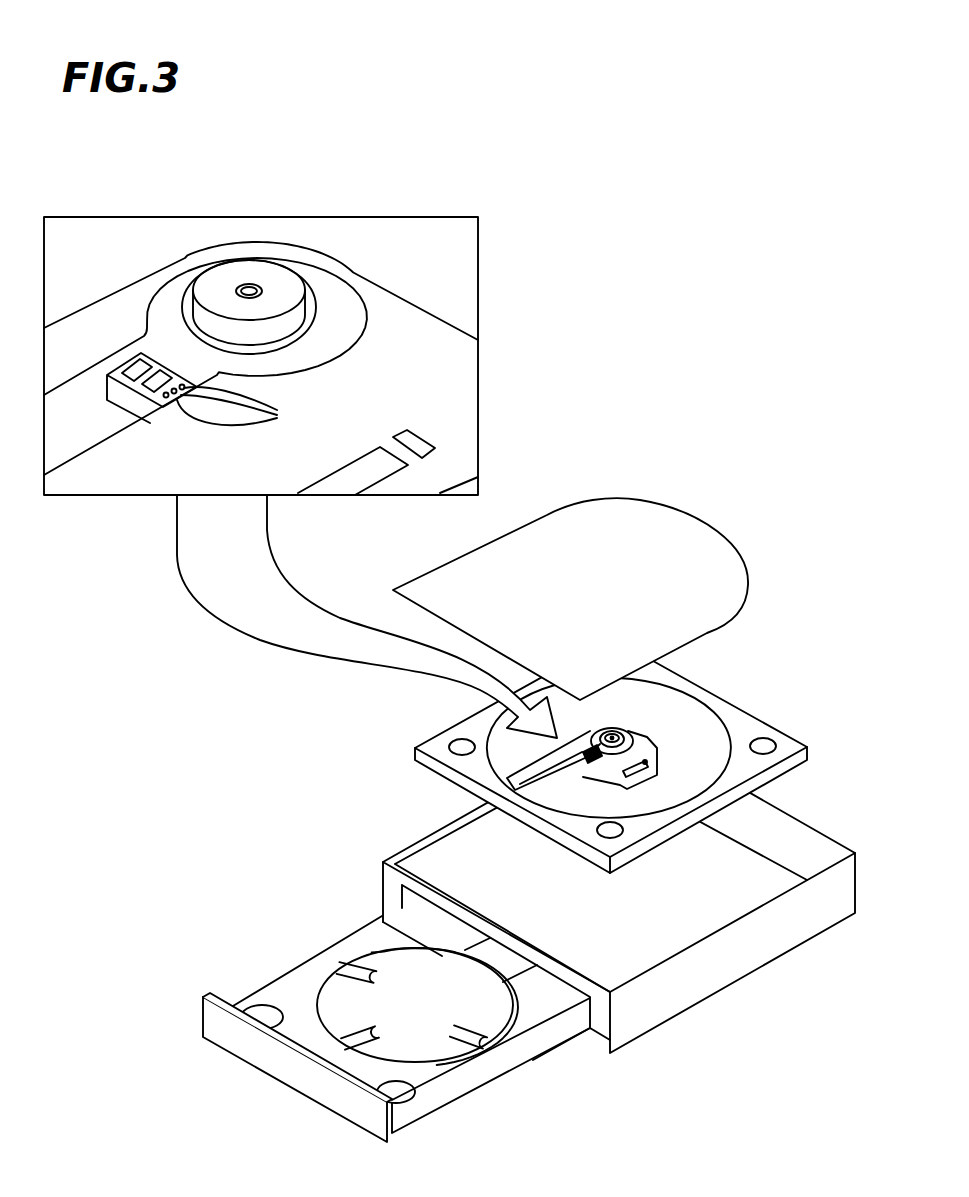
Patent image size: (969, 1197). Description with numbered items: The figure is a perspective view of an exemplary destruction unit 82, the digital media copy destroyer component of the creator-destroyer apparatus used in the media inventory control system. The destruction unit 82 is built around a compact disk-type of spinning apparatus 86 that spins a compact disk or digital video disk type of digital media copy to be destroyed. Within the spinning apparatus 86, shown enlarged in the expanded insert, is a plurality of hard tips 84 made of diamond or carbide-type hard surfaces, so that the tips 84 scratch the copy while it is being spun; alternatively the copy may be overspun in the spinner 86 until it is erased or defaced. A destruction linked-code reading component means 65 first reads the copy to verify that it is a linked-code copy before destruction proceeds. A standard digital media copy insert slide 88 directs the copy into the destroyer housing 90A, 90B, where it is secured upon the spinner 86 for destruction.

The destruction linked-code reading component means 65 is at (622, 779).
The destruction unit 82 is at (449, 681).
The hard tips 84 is at (583, 757).
The spinning apparatus 86 is at (757, 727).
The digital media copy insert slide 88 is at (433, 1109).
The destroyer housing 90A is at (693, 547).
The destroyer housing 90B is at (728, 960).